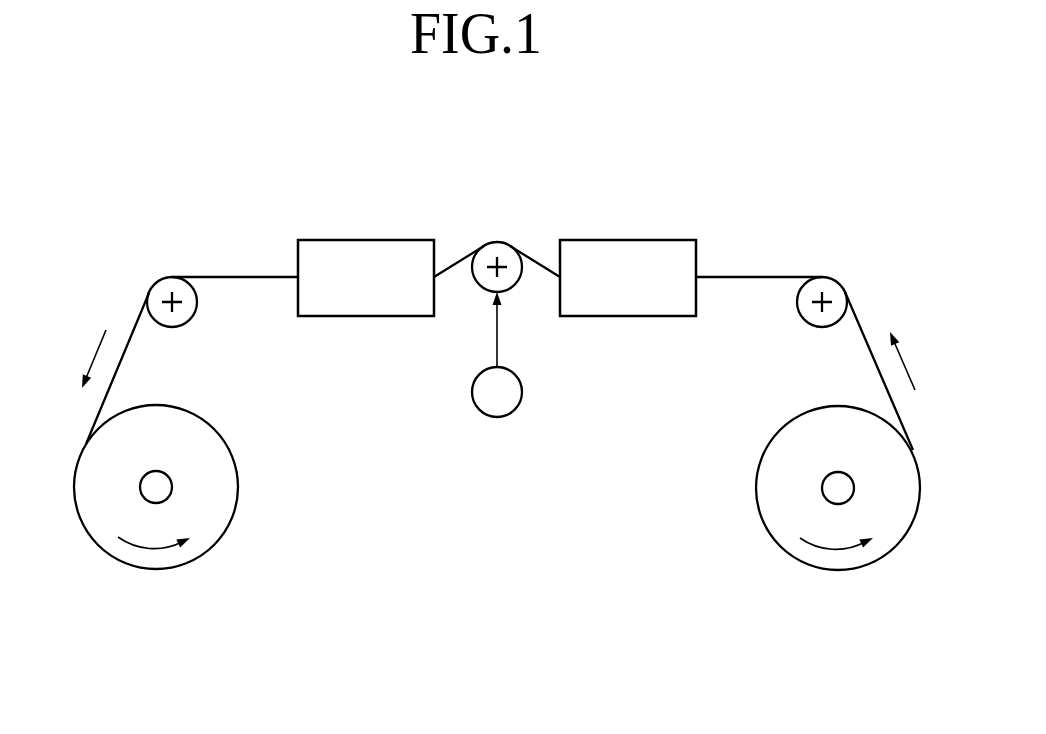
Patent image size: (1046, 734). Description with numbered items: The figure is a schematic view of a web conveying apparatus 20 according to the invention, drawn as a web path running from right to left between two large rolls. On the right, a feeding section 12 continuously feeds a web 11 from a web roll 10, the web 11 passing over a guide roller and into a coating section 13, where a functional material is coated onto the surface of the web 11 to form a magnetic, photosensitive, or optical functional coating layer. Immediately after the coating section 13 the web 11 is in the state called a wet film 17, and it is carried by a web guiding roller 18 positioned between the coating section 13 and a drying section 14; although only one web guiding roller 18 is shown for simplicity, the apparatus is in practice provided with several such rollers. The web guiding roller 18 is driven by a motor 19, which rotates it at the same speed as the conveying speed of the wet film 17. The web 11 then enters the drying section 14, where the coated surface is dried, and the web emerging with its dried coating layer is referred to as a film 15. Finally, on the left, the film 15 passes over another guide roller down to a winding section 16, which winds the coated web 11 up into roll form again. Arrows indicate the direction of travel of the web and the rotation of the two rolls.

The web roll 10 is at (780, 513).
The web 11 is at (757, 277).
The feeding section 12 is at (740, 458).
The coating section 13 is at (628, 316).
The drying section 14 is at (366, 316).
The film 15 is at (223, 277).
The winding section 16 is at (253, 457).
The wet film 17 is at (532, 259).
The web guiding roller 18 is at (500, 245).
The motor 19 is at (497, 417).
The web conveying apparatus 20 is at (443, 560).